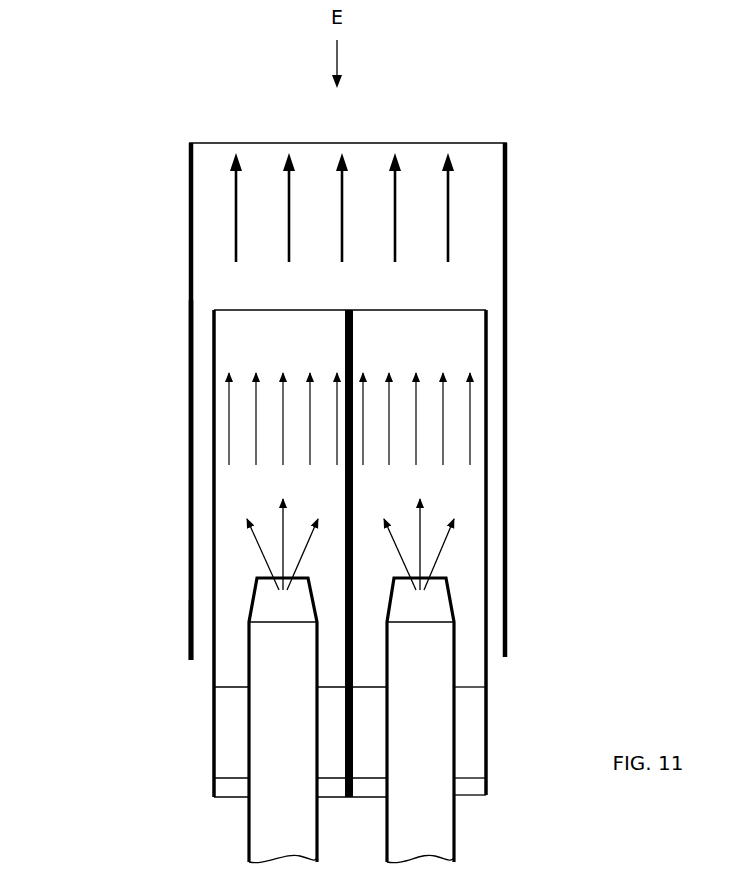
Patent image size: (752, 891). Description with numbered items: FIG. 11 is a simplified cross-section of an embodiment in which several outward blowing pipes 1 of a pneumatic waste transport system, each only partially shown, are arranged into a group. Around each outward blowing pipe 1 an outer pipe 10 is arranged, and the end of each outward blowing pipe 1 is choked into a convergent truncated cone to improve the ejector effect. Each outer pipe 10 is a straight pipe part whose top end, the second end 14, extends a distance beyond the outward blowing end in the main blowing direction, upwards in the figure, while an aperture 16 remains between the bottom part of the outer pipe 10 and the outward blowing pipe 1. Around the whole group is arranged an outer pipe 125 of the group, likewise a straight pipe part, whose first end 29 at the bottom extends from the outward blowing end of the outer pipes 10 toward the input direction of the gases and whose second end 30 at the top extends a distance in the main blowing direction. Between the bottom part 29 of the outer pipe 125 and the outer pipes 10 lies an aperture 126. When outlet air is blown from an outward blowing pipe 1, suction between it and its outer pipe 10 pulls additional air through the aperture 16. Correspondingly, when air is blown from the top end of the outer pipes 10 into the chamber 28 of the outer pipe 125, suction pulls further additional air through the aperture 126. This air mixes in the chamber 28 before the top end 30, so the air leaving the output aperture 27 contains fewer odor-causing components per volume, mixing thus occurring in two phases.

The outward blowing pipe 1 is at (248, 850).
The outer pipe 10 is at (213, 598).
The second end of the outer pipe 14 is at (213, 313).
The aperture 16 is at (232, 789).
The output aperture 27 is at (208, 155).
The chamber 28 is at (289, 292).
The first end of the outer pipe of the group 29 is at (190, 660).
The second end of the outer pipe of the group 30 is at (189, 145).
The outer pipe of the group 125 is at (189, 522).
The aperture 126 is at (203, 672).